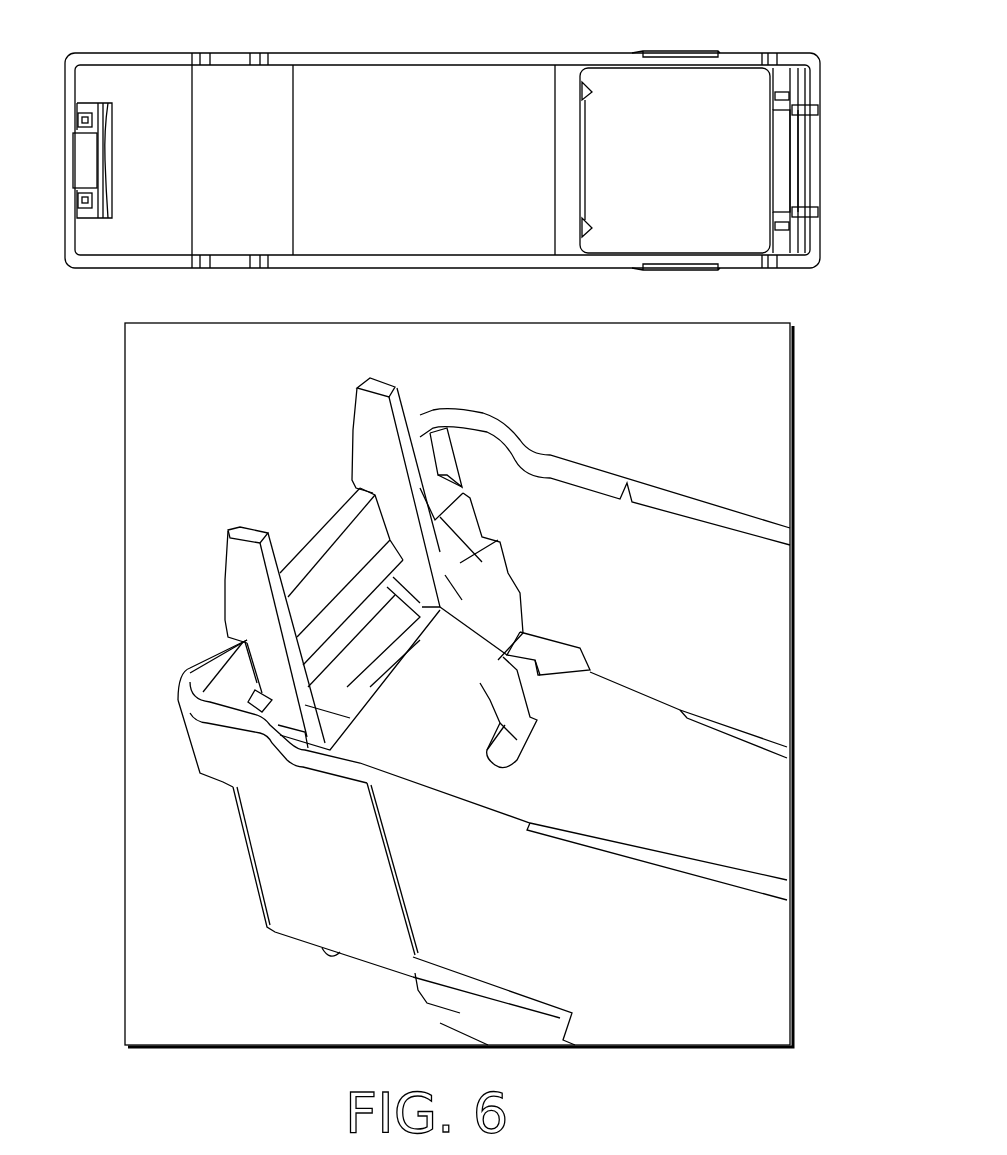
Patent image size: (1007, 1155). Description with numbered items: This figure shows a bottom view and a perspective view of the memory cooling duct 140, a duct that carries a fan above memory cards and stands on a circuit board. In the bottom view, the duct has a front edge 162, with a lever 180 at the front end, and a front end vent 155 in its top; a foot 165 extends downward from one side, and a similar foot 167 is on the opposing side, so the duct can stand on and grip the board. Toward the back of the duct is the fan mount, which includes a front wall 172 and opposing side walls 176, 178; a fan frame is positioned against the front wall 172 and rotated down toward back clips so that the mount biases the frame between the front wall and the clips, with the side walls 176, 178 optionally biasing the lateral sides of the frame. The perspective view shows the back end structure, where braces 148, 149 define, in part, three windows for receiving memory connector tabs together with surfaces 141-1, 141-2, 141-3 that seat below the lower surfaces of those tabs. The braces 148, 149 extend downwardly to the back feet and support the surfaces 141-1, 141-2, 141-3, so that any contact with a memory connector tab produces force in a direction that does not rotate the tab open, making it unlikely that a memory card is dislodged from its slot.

The memory cooling duct 140 is at (178, 52).
The front end vent 155 is at (162, 127).
The foot 165 is at (235, 57).
The foot 167 is at (235, 262).
The front wall 172 is at (585, 153).
The front edge 162 is at (72, 215).
The lever 180 is at (108, 168).
The surface 141-1 is at (250, 690).
The surface 141-2 is at (425, 628).
The surface 141-3 is at (505, 598).
The brace 148 is at (307, 703).
The brace 149 is at (445, 590).
The side wall 176 is at (437, 1005).
The side wall 178 is at (737, 733).